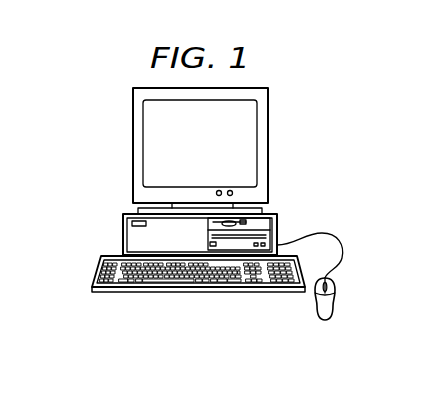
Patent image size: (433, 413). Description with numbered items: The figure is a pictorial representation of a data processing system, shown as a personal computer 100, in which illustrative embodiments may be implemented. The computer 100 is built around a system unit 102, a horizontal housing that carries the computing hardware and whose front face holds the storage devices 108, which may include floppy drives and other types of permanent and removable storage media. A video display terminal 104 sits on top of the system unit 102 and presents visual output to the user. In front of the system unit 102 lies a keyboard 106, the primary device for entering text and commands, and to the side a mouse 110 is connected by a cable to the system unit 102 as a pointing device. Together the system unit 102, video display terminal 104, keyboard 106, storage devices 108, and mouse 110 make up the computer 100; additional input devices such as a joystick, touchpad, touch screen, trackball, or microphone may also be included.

The computer 100 is at (74, 133).
The system unit 102 is at (123, 230).
The video display terminal 104 is at (268, 147).
The keyboard 106 is at (120, 293).
The storage devices 108 is at (243, 223).
The mouse 110 is at (325, 321).